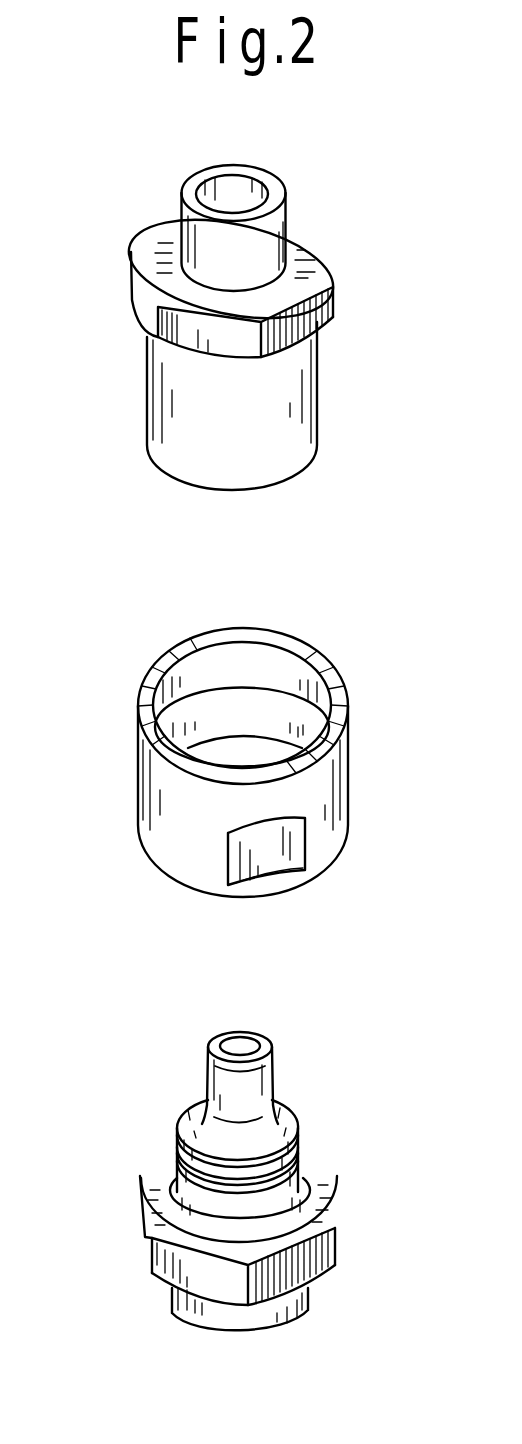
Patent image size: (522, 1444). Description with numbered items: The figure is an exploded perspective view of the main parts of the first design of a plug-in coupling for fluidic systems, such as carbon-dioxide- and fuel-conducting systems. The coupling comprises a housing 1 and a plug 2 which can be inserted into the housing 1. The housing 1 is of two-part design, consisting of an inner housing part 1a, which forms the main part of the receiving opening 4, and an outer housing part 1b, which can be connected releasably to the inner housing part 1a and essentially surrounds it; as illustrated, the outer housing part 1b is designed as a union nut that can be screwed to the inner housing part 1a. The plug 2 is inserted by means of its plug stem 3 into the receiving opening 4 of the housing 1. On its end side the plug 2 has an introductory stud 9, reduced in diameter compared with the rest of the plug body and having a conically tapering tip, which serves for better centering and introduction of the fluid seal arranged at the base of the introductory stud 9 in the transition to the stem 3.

The housing 1 is at (73, 493).
The inner housing part 1a is at (177, 453).
The outer housing part 1b is at (157, 657).
The plug 2 is at (126, 1298).
The plug stem 3 is at (300, 1176).
The receiving opening 4 is at (243, 428).
The introductory stud 9 is at (217, 1082).